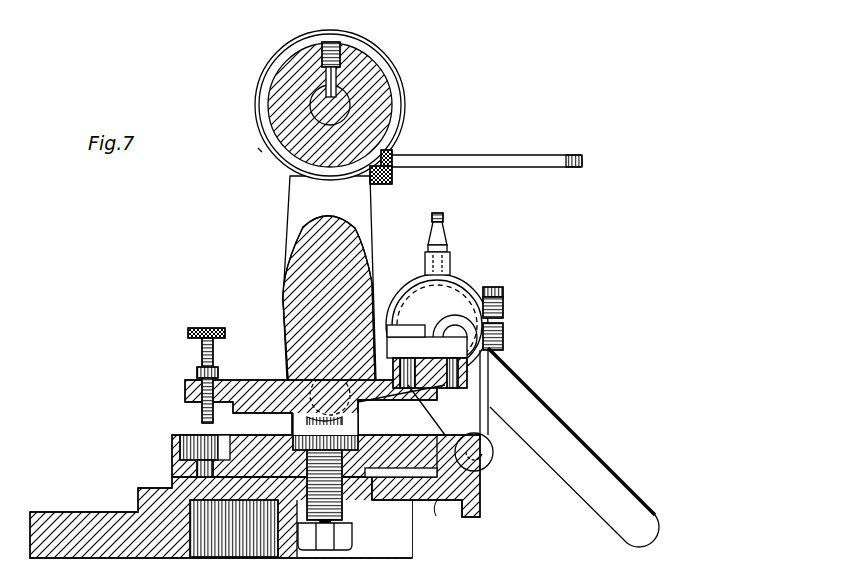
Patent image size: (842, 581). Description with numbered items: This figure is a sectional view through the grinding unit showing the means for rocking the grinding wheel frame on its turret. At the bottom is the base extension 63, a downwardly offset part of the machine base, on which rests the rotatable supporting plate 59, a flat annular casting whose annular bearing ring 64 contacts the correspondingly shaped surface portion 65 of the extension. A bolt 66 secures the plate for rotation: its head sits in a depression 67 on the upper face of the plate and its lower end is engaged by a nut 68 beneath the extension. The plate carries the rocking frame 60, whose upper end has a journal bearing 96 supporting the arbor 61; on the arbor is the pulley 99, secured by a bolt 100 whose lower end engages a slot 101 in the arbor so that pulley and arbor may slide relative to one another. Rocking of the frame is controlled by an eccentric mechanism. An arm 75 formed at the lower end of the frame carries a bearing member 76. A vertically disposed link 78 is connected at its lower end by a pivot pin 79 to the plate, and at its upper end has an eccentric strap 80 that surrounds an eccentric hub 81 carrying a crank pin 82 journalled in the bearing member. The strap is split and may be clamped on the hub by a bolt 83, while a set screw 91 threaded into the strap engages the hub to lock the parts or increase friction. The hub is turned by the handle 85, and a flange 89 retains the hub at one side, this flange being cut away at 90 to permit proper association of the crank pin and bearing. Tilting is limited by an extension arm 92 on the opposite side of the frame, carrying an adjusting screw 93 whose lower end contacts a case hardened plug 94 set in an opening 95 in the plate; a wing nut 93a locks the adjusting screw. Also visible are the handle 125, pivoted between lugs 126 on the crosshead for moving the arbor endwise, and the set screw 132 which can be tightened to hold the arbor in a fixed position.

The rotatable supporting plate 59 is at (436, 512).
The rocking frame 60 is at (310, 260).
The arbor 61 is at (248, 135).
The base extension 63 is at (150, 547).
The annular bearing ring 64 is at (180, 470).
The bearing surface portion 65 is at (480, 500).
The bolt 66 is at (338, 500).
The depression 67 is at (347, 436).
The nut 68 is at (352, 540).
The arm 75 is at (388, 398).
The bearing member 76 is at (497, 312).
The link 78 is at (478, 388).
The pivot pin 79 is at (492, 472).
The eccentric strap 80 is at (503, 335).
The eccentric hub 81 is at (459, 272).
The crank pin 82 is at (505, 345).
The bolt 83 is at (488, 288).
The handle 85 is at (575, 437).
The flange 89 is at (468, 273).
The cut-away portion 90 is at (466, 325).
The set screw 91 is at (443, 236).
The extension arm 92 is at (264, 378).
The adjusting screw 93 is at (188, 336).
The wing nut 93a is at (196, 372).
The case hardened plug 94 is at (200, 434).
The opening 95 is at (225, 442).
The journal bearing 96 is at (393, 104).
The pulley 99 is at (373, 63).
The bolt 100 is at (338, 78).
The slot 101 is at (248, 135).
The handle 125 is at (508, 162).
The lugs 126 is at (392, 178).
The set screw 132 is at (389, 156).